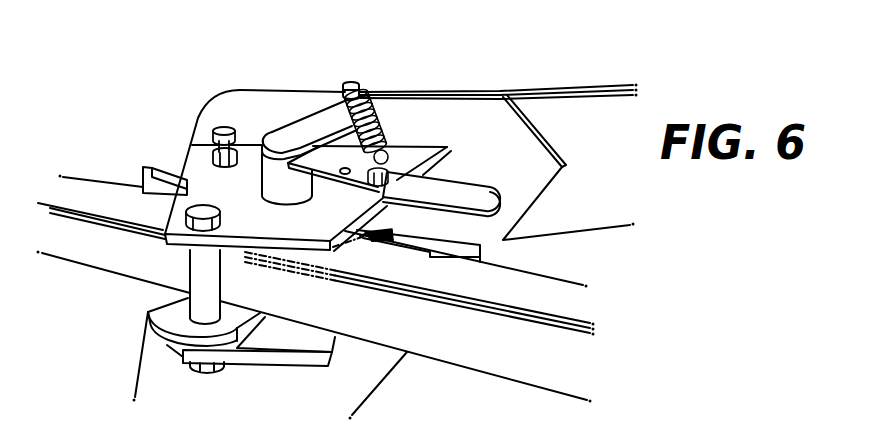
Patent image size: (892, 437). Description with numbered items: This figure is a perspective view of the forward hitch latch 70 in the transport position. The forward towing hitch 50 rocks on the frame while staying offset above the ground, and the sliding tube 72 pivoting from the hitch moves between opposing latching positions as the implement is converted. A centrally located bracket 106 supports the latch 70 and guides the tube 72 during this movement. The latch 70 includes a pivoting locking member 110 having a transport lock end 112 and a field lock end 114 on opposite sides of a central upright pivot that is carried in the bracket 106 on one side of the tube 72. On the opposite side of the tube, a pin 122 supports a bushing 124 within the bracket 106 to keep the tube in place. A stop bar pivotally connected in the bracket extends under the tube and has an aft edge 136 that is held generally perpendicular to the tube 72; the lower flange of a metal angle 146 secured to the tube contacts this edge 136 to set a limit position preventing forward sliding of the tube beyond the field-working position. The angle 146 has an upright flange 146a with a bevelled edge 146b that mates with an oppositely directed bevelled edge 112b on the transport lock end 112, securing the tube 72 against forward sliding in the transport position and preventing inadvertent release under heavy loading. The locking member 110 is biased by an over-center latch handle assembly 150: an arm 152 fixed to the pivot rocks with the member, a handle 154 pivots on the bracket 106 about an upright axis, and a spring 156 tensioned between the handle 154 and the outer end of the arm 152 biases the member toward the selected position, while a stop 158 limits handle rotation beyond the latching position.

The latch 70 is at (430, 60).
The forward towing hitch 50 is at (550, 153).
The tube 72 is at (477, 367).
The bracket 106 is at (284, 220).
The locking member 110 is at (175, 172).
The transport lock end 112 is at (493, 258).
The bevelled edge 112b is at (387, 240).
The field lock end 114 is at (147, 167).
The pin 122 is at (185, 220).
The bushing 124 is at (192, 272).
The aft edge 136 is at (255, 333).
The angle 146 is at (322, 340).
The angle flange 146a is at (357, 238).
The bevelled edge 146b is at (380, 236).
The over-center latch handle assembly 150 is at (302, 84).
The arm 152 is at (285, 137).
The handle 154 is at (480, 183).
The spring 156 is at (386, 138).
The stop 158 is at (222, 127).